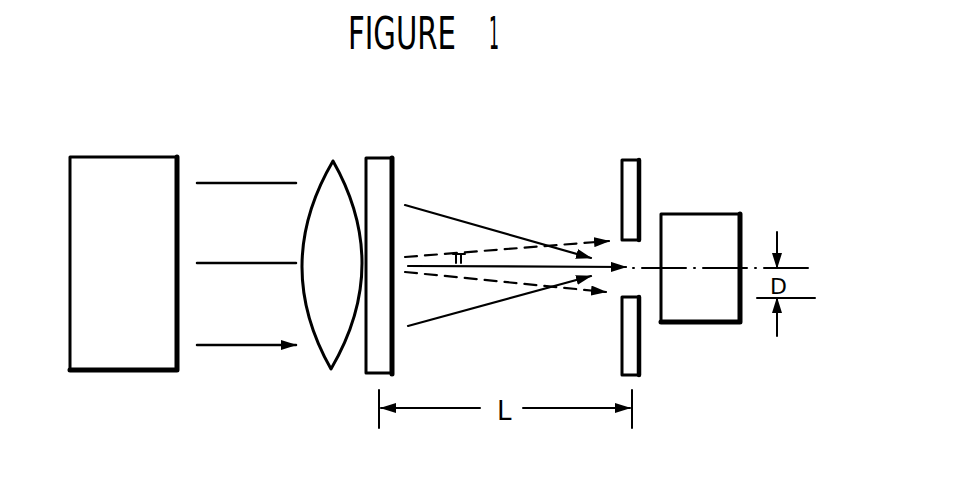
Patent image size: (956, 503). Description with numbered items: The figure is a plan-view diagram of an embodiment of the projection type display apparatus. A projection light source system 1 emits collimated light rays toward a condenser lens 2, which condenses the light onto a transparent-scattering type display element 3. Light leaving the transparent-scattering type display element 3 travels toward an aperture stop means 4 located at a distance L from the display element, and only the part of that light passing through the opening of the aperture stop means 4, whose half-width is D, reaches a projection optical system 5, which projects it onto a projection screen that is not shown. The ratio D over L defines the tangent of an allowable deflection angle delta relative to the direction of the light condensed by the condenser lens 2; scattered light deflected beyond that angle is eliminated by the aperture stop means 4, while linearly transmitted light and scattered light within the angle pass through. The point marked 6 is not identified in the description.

The light source 1 is at (97, 157).
The lens 2 is at (318, 183).
The plate 3 is at (388, 158).
The aperture 4 is at (632, 172).
The detector 5 is at (695, 227).
The focal point 6 is at (459, 256).